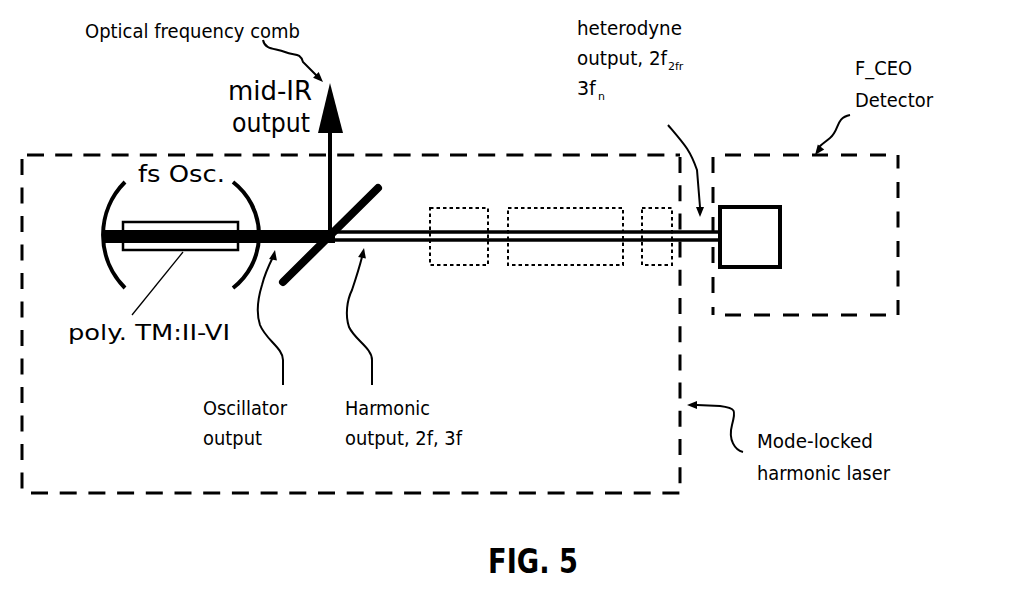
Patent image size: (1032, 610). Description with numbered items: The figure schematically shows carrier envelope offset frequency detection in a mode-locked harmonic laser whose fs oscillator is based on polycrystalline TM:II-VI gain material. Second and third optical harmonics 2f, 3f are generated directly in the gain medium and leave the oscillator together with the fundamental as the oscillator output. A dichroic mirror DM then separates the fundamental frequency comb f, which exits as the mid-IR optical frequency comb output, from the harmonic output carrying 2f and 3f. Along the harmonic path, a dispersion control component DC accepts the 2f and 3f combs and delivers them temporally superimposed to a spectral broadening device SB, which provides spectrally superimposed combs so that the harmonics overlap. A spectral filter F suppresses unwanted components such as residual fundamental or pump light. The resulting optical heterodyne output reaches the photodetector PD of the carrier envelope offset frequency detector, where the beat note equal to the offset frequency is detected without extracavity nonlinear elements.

The dichroic mirror DM is at (323, 253).
The photodetector PD is at (750, 221).
The dispersion control component DC is at (459, 219).
The spectral broadening device SB is at (565, 219).
The spectral filter F is at (657, 219).
The second optical harmonic 2f is at (525, 212).
The third optical harmonic 3f is at (525, 260).
The fundamental frequency comb f is at (337, 159).